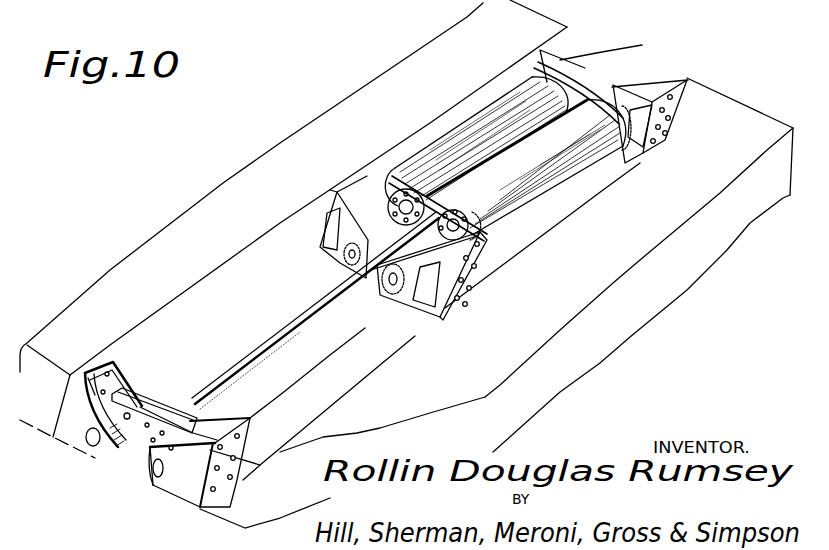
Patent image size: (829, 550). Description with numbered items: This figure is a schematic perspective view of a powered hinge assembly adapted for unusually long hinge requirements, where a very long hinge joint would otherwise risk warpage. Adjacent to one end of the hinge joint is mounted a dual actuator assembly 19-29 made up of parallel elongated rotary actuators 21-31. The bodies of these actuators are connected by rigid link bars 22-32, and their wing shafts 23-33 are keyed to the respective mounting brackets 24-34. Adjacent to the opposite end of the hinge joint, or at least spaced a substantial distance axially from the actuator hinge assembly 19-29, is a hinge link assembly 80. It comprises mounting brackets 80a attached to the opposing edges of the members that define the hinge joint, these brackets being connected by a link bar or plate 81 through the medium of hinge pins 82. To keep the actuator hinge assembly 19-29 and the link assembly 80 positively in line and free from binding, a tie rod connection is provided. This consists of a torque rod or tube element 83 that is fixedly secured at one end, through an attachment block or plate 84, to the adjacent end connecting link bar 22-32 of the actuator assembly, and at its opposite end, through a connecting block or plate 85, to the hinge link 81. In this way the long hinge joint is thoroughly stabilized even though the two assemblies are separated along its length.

The dual actuator assembly 19-29 is at (488, 86).
The parallel elongated rotary actuators 21-31 is at (510, 160).
The rigid link bars 22-32 is at (482, 231).
The wing shafts 23-33 is at (383, 285).
The mounting brackets 24-34 is at (357, 190).
The hinge link assembly 80 is at (148, 352).
The mounting brackets 80a is at (75, 437).
The link bar or plate 81 is at (130, 414).
The hinge pins 82 is at (157, 469).
The torque rod or tube element 83 is at (283, 327).
The attachment block or plate 84 is at (460, 200).
The connecting block or plate 85 is at (162, 406).